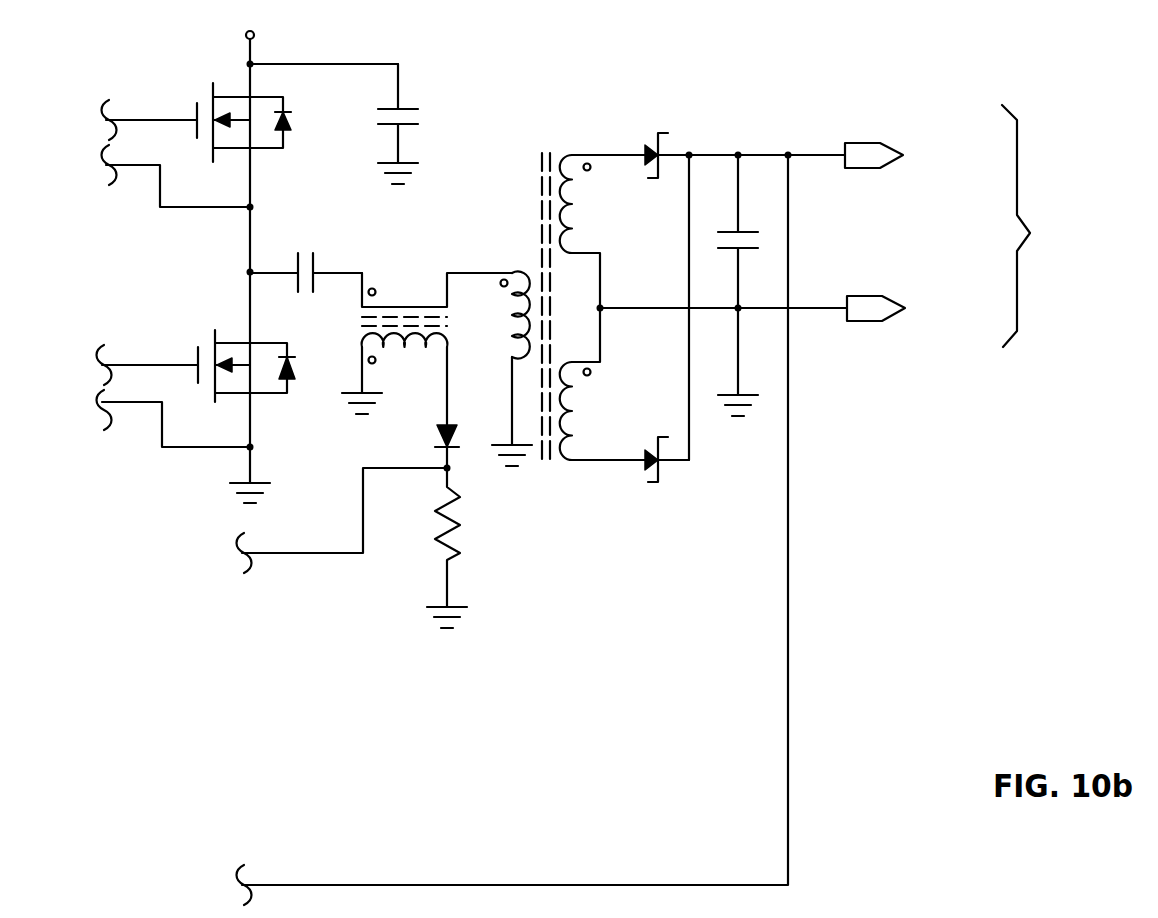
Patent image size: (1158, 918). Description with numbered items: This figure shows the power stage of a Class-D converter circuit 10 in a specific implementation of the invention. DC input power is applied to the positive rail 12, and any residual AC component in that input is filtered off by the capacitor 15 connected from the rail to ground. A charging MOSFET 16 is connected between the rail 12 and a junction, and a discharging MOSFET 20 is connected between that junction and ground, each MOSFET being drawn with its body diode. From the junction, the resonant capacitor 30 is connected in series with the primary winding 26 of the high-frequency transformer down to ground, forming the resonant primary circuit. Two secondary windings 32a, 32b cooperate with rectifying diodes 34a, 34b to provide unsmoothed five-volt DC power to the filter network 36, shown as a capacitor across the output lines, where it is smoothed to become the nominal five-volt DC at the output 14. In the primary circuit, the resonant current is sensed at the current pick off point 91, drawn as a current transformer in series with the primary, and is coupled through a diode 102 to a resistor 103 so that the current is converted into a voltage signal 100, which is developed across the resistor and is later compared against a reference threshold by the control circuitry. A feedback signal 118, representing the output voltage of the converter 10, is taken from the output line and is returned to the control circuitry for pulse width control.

The converter circuit 10 is at (561, 75).
The positive rail 12 is at (255, 36).
The output 14 is at (954, 226).
The capacitor 15 is at (412, 108).
The charging MOSFET 16 is at (237, 100).
The discharging MOSFET 20 is at (236, 345).
The primary winding 26 is at (527, 343).
The resonant capacitor 30 is at (305, 262).
The secondary winding 32a is at (573, 203).
The secondary winding 32b is at (577, 407).
The rectifying diode 34a is at (648, 148).
The rectifying diode 34b is at (655, 463).
The filter network 36 is at (730, 250).
The current pick off point 91 is at (393, 312).
The voltage signal 100 is at (342, 527).
The diode 102 is at (447, 427).
The resistor 103 is at (460, 552).
The feedback signal 118 is at (790, 557).